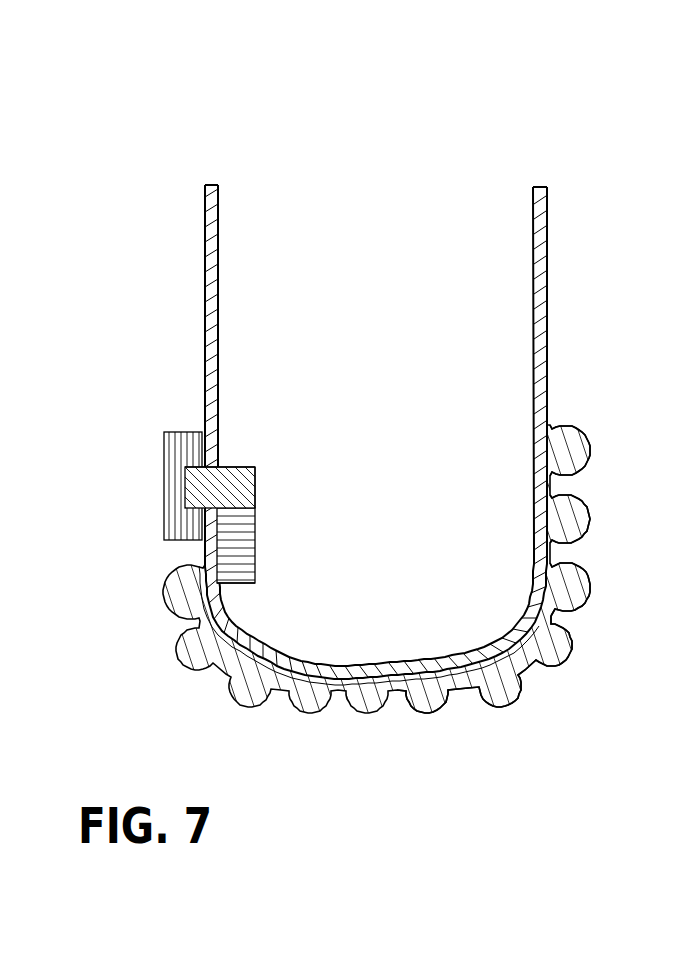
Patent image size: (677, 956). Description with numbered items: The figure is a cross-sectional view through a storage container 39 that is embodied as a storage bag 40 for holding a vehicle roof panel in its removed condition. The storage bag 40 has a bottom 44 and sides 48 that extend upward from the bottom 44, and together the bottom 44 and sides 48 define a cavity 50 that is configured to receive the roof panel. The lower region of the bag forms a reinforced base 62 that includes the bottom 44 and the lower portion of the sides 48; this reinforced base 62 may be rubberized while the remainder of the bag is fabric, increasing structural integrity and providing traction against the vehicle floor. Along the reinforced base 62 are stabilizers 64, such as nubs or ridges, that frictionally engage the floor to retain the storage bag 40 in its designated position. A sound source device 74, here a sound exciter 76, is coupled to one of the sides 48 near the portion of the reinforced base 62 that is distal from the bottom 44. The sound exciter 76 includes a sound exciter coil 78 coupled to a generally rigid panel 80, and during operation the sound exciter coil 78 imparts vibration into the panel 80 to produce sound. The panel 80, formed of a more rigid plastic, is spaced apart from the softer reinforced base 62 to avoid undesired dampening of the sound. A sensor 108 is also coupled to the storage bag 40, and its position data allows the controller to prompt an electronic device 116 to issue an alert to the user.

The storage container 39 is at (280, 163).
The storage bag 40 is at (472, 120).
The bottom 44 is at (380, 663).
The sides 48 is at (547, 282).
The cavity 50 is at (448, 360).
The reinforced base 62 is at (552, 484).
The stabilizers 64 is at (567, 657).
The sound source device 74 is at (262, 461).
The sound exciter 76 is at (232, 462).
The sound exciter coil 78 is at (195, 490).
The panel 80 is at (187, 458).
The sensor 108 is at (237, 560).
The electronic device 116 is at (259, 497).